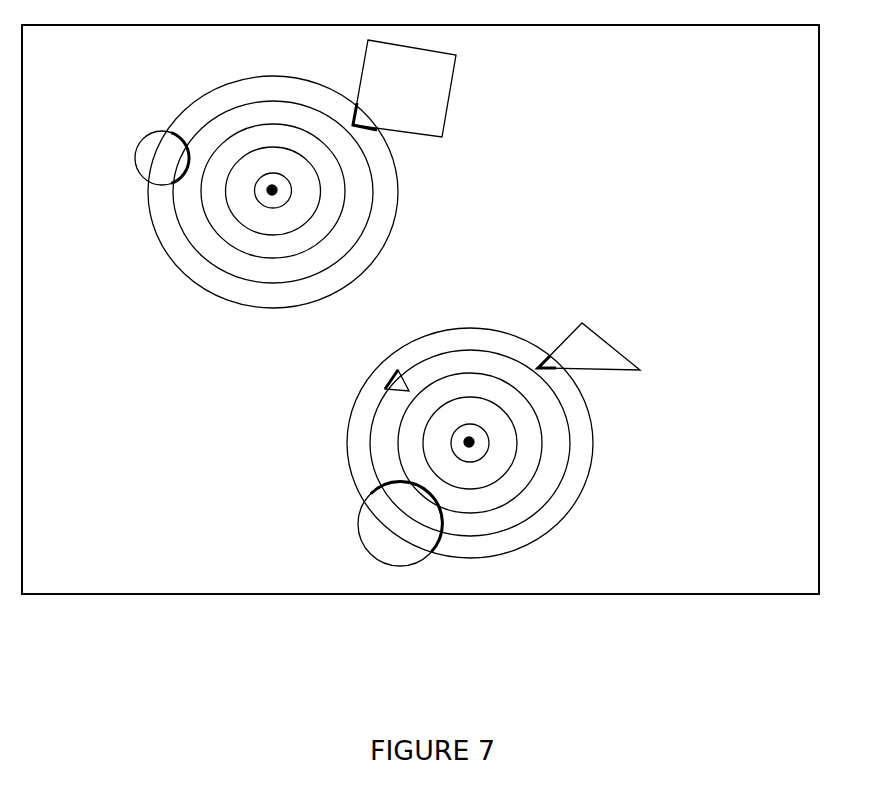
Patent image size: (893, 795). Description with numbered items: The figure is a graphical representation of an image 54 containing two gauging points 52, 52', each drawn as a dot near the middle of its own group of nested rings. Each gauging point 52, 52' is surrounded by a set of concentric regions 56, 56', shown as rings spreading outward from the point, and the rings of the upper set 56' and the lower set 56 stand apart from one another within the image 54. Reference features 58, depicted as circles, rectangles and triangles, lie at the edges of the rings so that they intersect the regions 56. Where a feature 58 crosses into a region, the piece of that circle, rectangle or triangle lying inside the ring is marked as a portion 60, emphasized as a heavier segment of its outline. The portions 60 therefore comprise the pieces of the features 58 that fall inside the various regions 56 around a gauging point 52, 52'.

The gauging point 52 is at (595, 454).
The gauging point 52' is at (409, 166).
The image 54 is at (797, 147).
The concentric regions 56 is at (476, 443).
The concentric regions 56' is at (292, 192).
The features 58 is at (451, 97).
The portions 60 is at (353, 117).